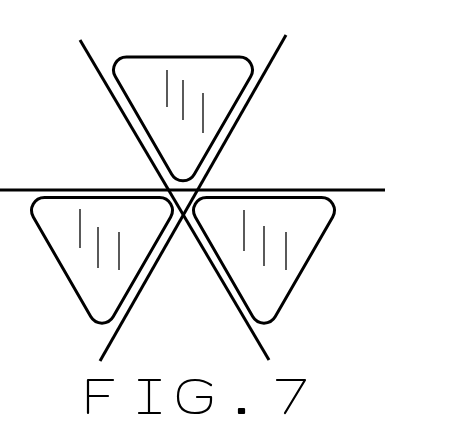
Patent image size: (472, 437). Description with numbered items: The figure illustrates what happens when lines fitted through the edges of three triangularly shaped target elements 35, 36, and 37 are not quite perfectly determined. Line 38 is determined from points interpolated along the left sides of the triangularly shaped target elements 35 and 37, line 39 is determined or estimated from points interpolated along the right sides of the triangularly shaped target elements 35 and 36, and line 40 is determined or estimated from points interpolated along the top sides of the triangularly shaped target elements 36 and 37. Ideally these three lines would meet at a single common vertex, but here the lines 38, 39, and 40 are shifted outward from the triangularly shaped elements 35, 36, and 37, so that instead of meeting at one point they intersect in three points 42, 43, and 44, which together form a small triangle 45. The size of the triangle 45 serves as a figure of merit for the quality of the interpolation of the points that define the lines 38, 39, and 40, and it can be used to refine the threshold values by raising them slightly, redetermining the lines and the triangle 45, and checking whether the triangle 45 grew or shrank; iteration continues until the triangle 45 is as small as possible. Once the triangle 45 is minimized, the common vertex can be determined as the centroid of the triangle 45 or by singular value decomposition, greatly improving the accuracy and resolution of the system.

The triangularly shaped target element 35 is at (196, 56).
The triangularly shaped target element 36 is at (66, 284).
The triangularly shaped target element 37 is at (320, 251).
The line 38 is at (93, 62).
The line 39 is at (278, 53).
The line 40 is at (45, 190).
The intersection point 42 is at (172, 188).
The intersection point 43 is at (197, 188).
The intersection point 44 is at (186, 201).
The small triangle 45 is at (190, 212).